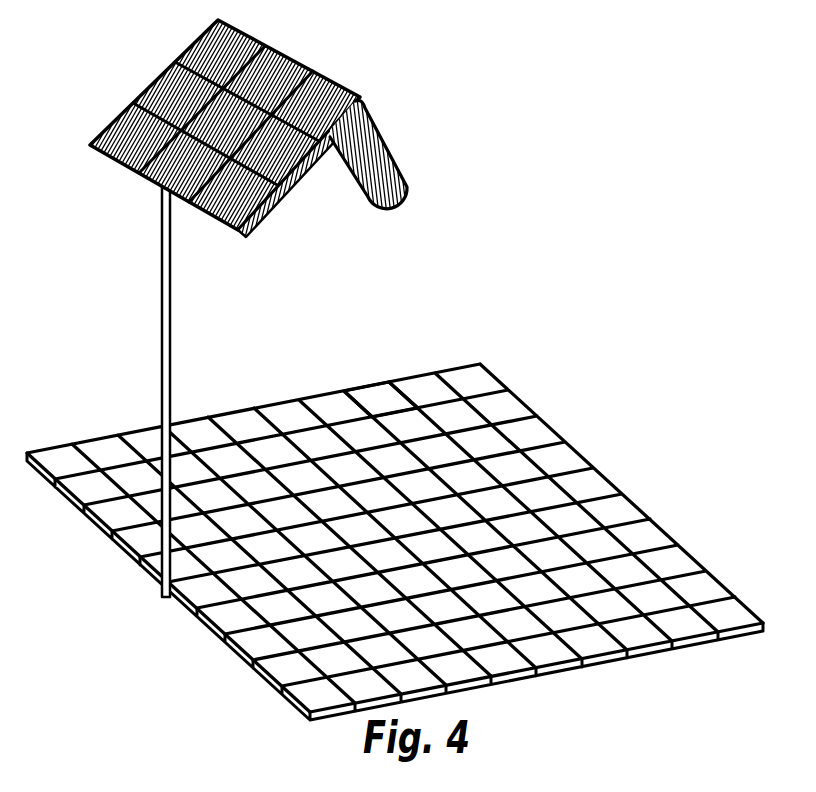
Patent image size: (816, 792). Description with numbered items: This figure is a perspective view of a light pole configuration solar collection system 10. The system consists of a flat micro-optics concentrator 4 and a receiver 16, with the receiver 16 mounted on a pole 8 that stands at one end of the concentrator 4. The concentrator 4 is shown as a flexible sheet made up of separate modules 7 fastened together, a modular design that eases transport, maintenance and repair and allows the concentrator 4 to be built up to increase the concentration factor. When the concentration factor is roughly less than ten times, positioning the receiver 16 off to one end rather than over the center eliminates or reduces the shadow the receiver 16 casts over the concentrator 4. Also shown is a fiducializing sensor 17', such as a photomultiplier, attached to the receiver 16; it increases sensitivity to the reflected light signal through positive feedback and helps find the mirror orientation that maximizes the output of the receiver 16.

The micro-optics concentrator 4 is at (395, 530).
The module 7 is at (380, 397).
The pole 8 is at (162, 315).
The light pole configuration solar collection system 10 is at (290, 298).
The receiver 16 is at (288, 60).
The fiducializing sensor 17' is at (398, 152).